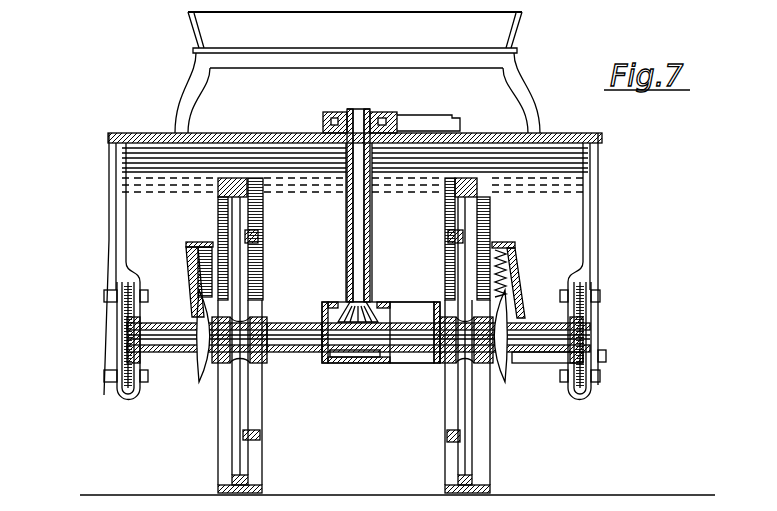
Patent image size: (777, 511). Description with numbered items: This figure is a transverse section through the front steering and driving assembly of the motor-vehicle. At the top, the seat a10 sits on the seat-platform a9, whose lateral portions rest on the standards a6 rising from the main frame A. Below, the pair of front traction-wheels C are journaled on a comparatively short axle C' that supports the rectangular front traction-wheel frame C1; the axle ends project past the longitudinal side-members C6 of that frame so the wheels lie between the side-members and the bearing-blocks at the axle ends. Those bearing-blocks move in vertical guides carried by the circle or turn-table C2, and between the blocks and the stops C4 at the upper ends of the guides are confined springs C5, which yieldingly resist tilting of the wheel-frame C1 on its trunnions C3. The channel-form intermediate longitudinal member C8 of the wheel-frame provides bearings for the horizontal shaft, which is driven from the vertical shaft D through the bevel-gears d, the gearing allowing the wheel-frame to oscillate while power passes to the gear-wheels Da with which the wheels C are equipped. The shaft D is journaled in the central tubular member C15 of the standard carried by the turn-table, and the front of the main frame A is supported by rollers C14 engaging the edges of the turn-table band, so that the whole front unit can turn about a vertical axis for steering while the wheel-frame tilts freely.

The seat a10 is at (393, 49).
The seat-platform a9 is at (283, 129).
The standards a6 is at (628, 226).
The main frame A is at (103, 353).
The front traction-wheels C is at (354, 335).
The axle C' is at (255, 361).
The front traction-wheel frame C1 is at (423, 343).
The circle or turn-table C2 is at (545, 266).
The trunnions C3 is at (514, 258).
The stops C4 is at (527, 210).
The springs C5 is at (557, 210).
The longitudinal side-members C6 is at (270, 315).
The channel-form intermediate longitudinal member C8 is at (330, 364).
The rollers C14 is at (630, 277).
The central tubular member C15 is at (345, 228).
The vertical shaft D is at (372, 246).
The bevel-gears d is at (383, 298).
The gear-wheels Da is at (258, 433).